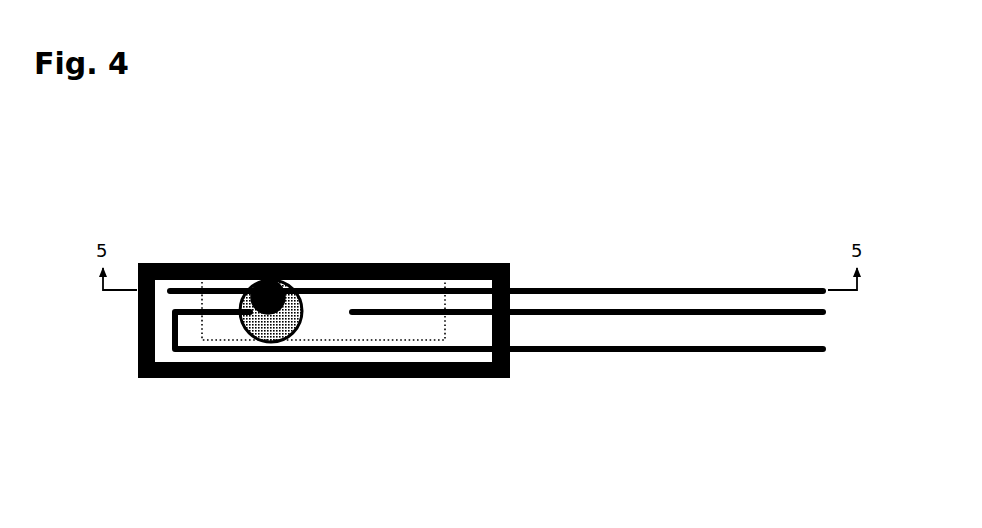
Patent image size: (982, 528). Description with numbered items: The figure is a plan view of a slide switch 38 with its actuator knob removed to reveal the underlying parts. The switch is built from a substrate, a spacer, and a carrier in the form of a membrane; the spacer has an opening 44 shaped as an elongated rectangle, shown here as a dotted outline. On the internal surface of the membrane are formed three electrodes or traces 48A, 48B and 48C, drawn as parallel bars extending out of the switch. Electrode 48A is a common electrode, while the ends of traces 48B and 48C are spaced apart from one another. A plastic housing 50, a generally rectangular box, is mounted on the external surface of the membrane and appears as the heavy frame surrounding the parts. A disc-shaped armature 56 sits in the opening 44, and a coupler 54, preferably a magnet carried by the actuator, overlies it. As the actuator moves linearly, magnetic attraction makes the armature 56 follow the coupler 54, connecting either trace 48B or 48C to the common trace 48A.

The slide switch 38 is at (523, 277).
The opening 44 is at (208, 330).
The common electrode 48A is at (575, 287).
The electrode trace 48B is at (825, 310).
The electrode trace 48C is at (793, 352).
The plastic housing 50 is at (180, 263).
The coupler 54 is at (275, 281).
The armature 56 is at (302, 304).